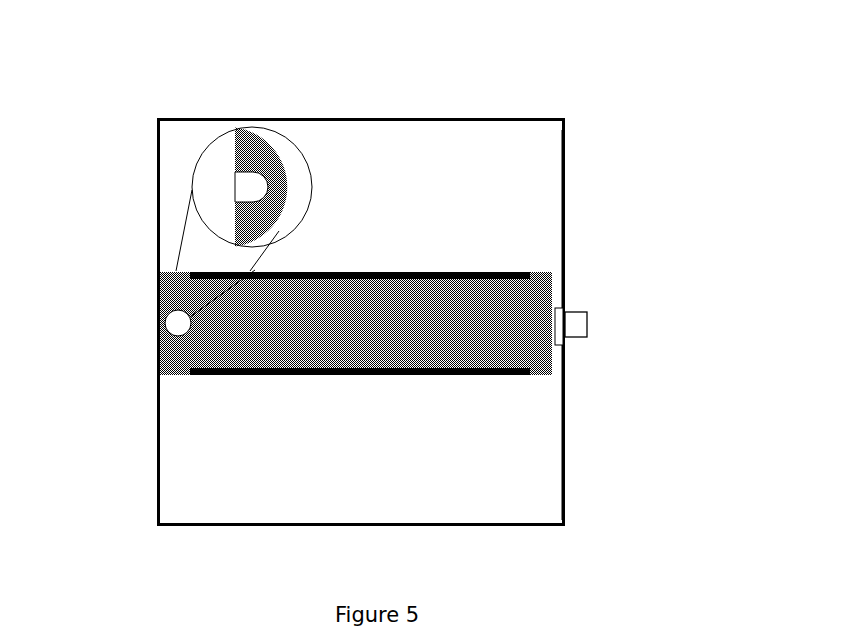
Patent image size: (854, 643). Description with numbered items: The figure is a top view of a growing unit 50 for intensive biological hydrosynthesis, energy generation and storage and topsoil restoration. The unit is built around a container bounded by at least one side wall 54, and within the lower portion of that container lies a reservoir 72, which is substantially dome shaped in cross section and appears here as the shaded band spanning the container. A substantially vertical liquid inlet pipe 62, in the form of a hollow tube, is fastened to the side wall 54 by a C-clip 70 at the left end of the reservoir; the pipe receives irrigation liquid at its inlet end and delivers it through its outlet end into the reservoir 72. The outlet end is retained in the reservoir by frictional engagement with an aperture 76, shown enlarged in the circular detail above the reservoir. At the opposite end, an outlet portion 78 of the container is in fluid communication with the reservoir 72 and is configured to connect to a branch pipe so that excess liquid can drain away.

The growing unit 50 is at (577, 108).
The side wall 54 is at (567, 216).
The liquid inlet pipe 62 is at (171, 329).
The C-clip 70 is at (158, 316).
The reservoir 72 is at (506, 333).
The aperture 76 is at (235, 188).
The outlet portion 78 is at (573, 348).